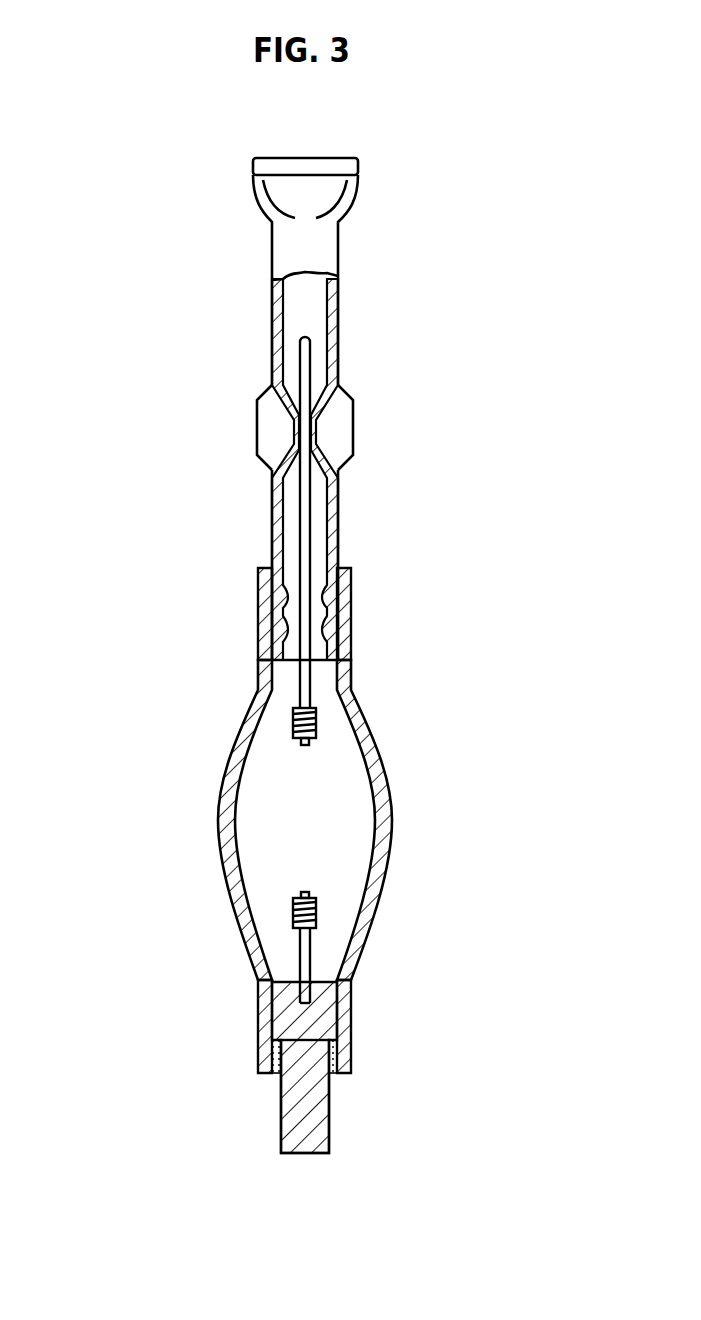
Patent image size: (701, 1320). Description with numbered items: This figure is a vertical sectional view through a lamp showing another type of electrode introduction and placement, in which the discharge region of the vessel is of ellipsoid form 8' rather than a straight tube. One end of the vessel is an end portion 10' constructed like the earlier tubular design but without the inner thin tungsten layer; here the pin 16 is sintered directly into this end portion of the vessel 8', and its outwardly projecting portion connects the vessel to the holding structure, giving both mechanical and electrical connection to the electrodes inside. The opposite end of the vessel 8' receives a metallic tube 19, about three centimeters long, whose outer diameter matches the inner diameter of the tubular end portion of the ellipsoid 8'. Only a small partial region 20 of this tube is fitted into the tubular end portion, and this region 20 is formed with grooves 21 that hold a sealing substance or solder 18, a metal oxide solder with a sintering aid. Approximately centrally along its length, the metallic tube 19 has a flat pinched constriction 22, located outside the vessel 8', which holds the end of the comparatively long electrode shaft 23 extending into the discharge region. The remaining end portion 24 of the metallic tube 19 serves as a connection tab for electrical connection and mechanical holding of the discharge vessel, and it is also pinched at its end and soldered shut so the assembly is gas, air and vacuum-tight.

The ellipsoid discharge vessel 8' is at (364, 820).
The end portion 10' is at (210, 1067).
The pin 16 is at (297, 1116).
The sealing element 18 is at (272, 627).
The metallic tube 19 is at (234, 490).
The partial region 20 is at (398, 681).
The grooves 21 is at (318, 593).
The pinched constriction 22 is at (322, 428).
The electrode shaft 23 is at (312, 518).
The remaining end portion 24 is at (272, 303).